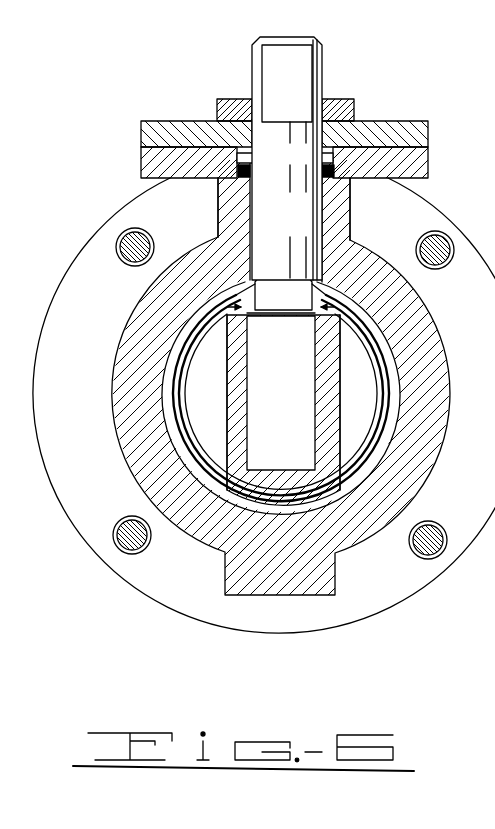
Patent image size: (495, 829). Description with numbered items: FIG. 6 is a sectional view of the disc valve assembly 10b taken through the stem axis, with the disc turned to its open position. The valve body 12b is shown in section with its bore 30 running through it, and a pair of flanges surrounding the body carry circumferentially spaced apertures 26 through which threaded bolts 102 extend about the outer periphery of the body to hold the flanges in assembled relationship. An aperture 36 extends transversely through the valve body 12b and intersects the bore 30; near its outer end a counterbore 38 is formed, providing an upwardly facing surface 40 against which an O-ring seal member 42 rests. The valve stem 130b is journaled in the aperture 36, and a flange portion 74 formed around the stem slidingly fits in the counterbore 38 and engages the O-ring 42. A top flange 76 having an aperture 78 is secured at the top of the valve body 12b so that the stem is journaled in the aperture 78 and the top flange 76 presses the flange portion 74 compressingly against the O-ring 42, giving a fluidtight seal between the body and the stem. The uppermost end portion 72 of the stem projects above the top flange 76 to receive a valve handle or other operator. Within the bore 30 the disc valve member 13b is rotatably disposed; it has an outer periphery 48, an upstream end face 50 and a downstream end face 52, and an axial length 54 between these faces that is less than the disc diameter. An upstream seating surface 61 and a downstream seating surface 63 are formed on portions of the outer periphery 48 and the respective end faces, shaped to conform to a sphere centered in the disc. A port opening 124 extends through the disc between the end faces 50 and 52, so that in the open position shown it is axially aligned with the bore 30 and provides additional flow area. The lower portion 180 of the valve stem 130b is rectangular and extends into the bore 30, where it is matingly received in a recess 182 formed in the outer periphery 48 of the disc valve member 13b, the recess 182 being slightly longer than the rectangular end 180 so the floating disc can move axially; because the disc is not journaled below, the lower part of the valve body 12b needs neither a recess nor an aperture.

The disc valve assembly 10b is at (345, 82).
The valve body 12b is at (227, 537).
The disc valve member 13b is at (338, 377).
The apertures 26 is at (128, 262).
The bore 30 is at (197, 470).
The aperture 36 is at (253, 205).
The counterbore 38 is at (243, 150).
The upwardly facing surface 40 is at (333, 168).
The O-ring seal member 42 is at (250, 176).
The outer periphery 48 is at (238, 280).
The upstream end face 50 is at (227, 405).
The downstream end face 52 is at (340, 408).
The axial length 54 is at (252, 320).
The upstream seating surface 61 is at (230, 292).
The downstream seating surface 63 is at (327, 290).
The uppermost end portion 72 is at (297, 58).
The flange portion 74 is at (282, 163).
The top flange 76 is at (170, 122).
The aperture 78 is at (257, 137).
The threaded bolts 102 is at (150, 240).
The port opening 124 is at (248, 427).
The valve stem 130b is at (302, 212).
The lower portion 180 is at (281, 300).
The recess 182 is at (303, 297).